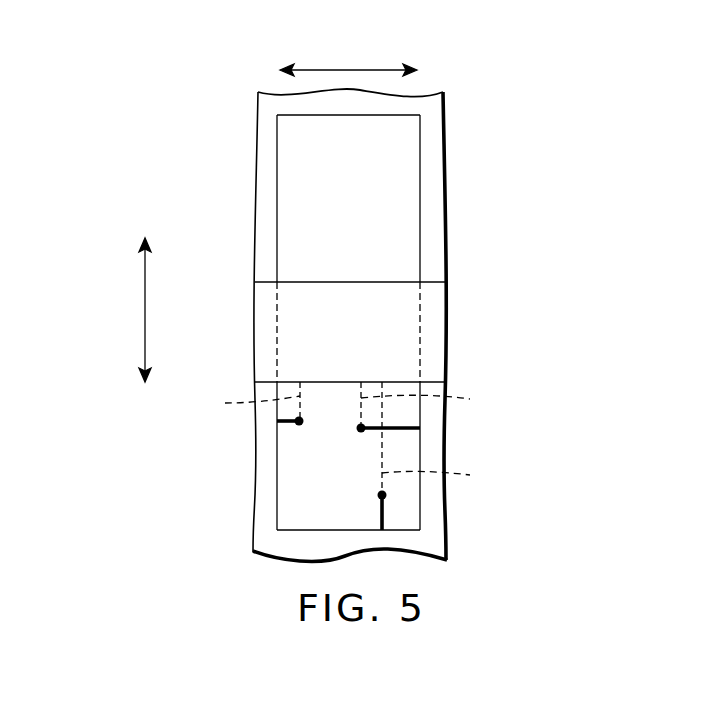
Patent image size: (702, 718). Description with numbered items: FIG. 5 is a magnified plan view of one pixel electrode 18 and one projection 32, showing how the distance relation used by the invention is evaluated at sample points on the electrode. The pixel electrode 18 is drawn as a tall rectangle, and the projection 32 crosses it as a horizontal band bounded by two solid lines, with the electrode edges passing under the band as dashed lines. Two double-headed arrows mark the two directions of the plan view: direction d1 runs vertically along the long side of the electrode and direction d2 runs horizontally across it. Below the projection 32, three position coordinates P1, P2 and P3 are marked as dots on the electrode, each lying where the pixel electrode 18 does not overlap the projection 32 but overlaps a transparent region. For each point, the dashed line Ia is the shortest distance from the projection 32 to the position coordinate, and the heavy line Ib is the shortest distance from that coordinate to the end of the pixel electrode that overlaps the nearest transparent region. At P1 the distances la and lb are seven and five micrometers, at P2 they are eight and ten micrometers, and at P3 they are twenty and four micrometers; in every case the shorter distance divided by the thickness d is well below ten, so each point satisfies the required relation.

The pixel electrode 18 is at (403, 193).
The projection 32 is at (430, 312).
The shortest distance la Ia is at (350, 441).
The shortest distance lb Ib is at (283, 425).
The position coordinate P1 is at (303, 420).
The position coordinate P2 is at (358, 431).
The position coordinate P3 is at (380, 496).
The direction d1 is at (145, 322).
The direction d2 is at (347, 68).